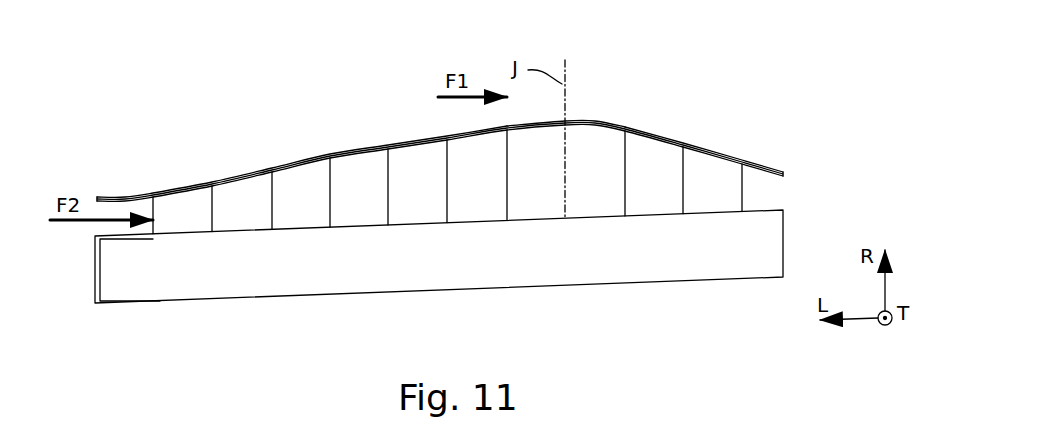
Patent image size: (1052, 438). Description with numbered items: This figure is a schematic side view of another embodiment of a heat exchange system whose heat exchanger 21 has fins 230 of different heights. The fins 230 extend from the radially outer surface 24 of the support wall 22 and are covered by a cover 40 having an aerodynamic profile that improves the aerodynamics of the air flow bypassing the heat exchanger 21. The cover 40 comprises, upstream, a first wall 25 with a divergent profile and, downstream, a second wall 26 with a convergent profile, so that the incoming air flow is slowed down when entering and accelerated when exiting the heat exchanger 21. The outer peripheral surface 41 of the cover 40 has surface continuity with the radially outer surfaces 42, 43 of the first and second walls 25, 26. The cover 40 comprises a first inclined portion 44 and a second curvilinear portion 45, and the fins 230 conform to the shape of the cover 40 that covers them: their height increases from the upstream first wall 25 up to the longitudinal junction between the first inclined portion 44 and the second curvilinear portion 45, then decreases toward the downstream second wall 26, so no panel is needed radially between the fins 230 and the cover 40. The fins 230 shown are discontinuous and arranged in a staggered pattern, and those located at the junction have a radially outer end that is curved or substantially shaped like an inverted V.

The heat exchanger 21 is at (801, 150).
The support wall 22 is at (448, 262).
The radially outer surface 24 is at (245, 228).
The first wall 25 is at (120, 239).
The second wall 26 is at (762, 191).
The cover 40 is at (651, 127).
The outer peripheral surface 41 is at (357, 147).
The radially outer surface of the first wall 42 is at (733, 151).
The radially outer surface of the second wall 43 is at (134, 188).
The first inclined portion 44 is at (400, 142).
The second curvilinear portion 45 is at (633, 127).
The fins 230 is at (654, 191).